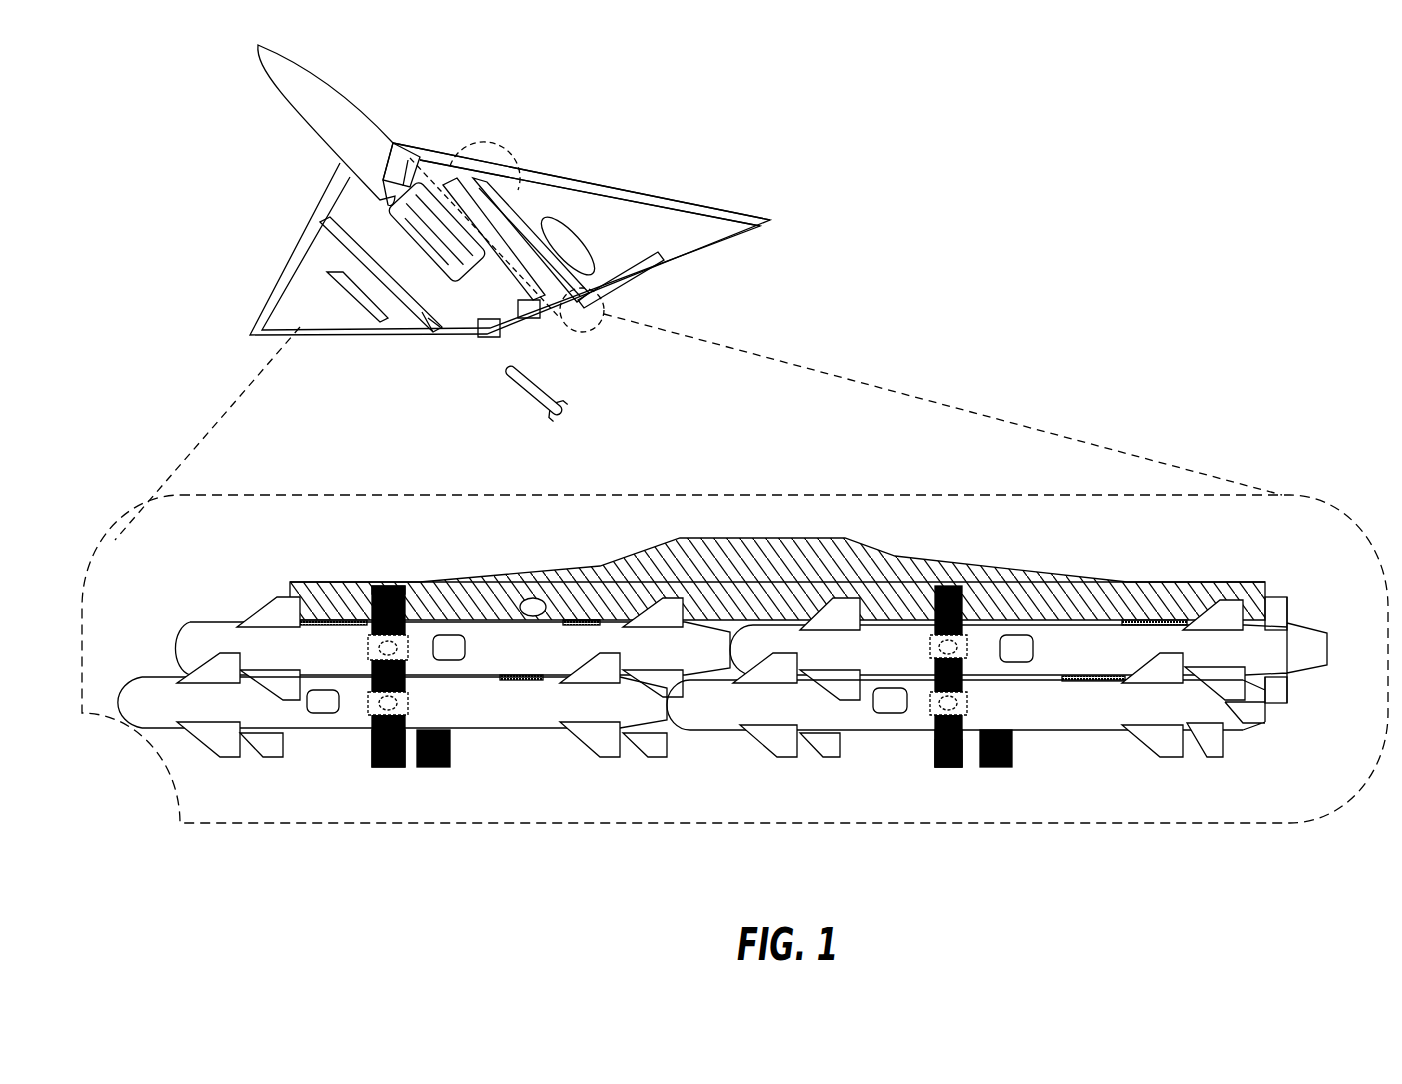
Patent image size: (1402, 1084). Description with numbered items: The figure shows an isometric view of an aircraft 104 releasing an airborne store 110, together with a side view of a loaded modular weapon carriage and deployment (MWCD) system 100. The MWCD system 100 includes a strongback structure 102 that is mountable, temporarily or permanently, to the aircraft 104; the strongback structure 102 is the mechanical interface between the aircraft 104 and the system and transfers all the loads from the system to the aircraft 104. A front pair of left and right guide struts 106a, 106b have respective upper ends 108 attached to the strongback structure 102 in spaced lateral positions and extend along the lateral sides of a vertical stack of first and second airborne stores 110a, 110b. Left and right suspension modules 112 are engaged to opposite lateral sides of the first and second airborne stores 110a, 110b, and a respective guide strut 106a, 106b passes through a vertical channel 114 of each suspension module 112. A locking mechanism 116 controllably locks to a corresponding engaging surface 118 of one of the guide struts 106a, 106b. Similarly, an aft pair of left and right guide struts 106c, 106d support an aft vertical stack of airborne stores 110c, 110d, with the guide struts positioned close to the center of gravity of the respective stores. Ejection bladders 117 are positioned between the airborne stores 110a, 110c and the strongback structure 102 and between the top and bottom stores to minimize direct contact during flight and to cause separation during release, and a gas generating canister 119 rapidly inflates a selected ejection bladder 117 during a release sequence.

The modular weapon carriage and deployment (MWCD) system 100 is at (520, 192).
The strongback structure 102 is at (895, 600).
The aircraft 104 is at (605, 184).
The left guide strut 106a is at (357, 767).
The right guide strut 106b is at (428, 767).
The left guide strut 106c is at (950, 767).
The right guide strut 106d is at (985, 767).
The upper end 108 is at (398, 590).
The airborne store 110 is at (560, 402).
The first airborne store 110a is at (188, 620).
The second airborne store 110b is at (142, 727).
The airborne store 110c is at (757, 627).
The airborne store 110d is at (715, 722).
The suspension module 112 is at (365, 640).
The vertical channel 114 is at (408, 640).
The locking mechanism 116 is at (547, 600).
The ejection bladder 117 is at (300, 600).
The engaging surface 118 is at (388, 588).
The gas generating canister 119 is at (600, 620).